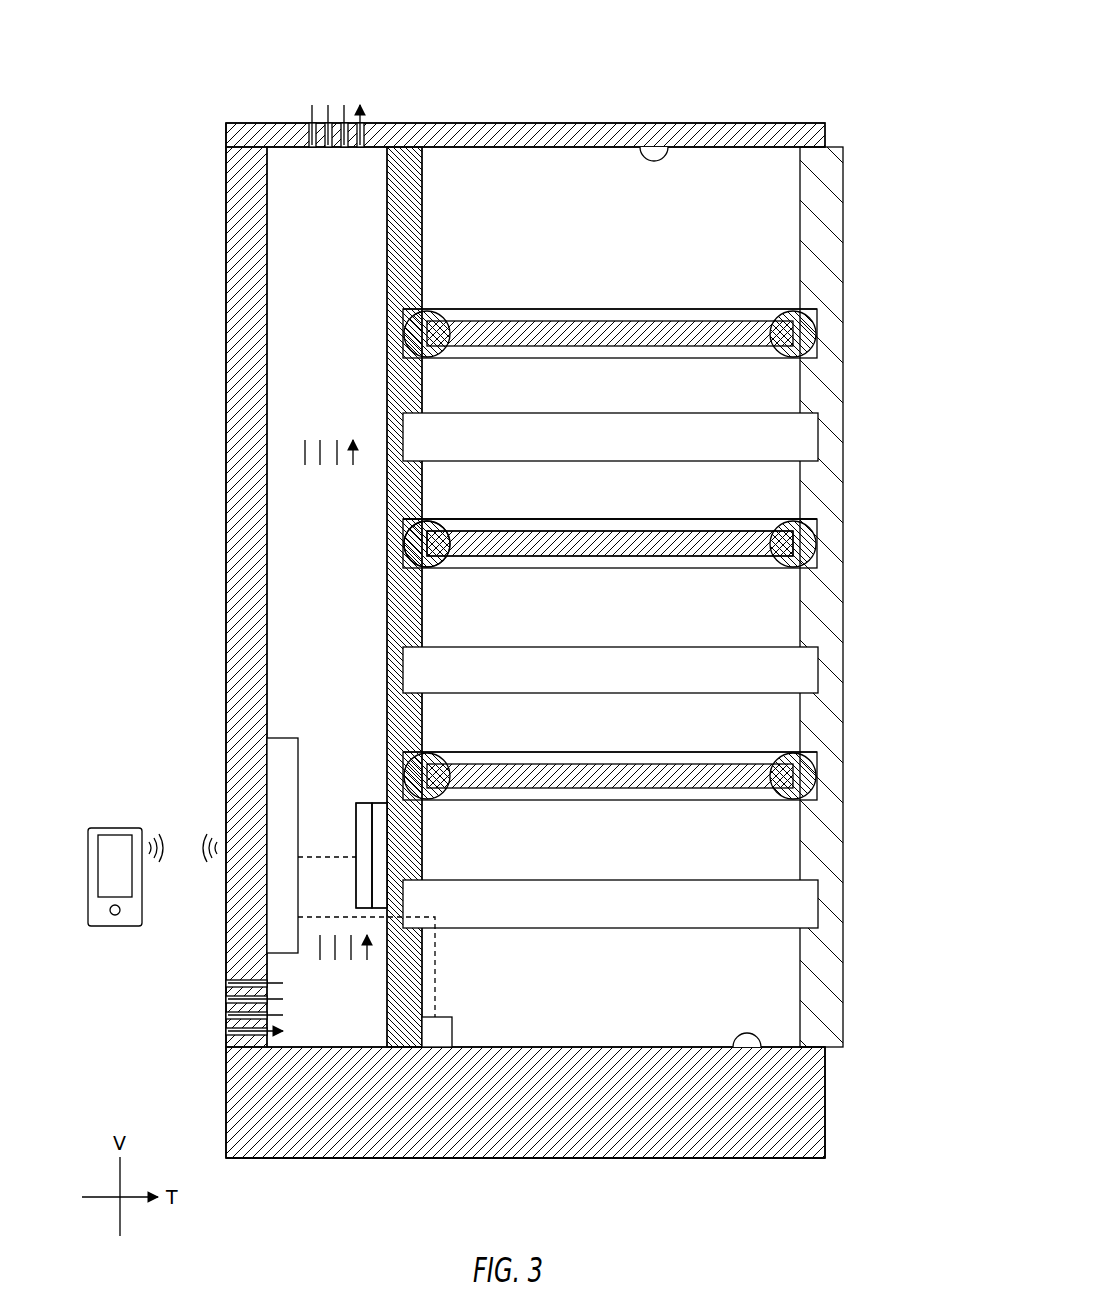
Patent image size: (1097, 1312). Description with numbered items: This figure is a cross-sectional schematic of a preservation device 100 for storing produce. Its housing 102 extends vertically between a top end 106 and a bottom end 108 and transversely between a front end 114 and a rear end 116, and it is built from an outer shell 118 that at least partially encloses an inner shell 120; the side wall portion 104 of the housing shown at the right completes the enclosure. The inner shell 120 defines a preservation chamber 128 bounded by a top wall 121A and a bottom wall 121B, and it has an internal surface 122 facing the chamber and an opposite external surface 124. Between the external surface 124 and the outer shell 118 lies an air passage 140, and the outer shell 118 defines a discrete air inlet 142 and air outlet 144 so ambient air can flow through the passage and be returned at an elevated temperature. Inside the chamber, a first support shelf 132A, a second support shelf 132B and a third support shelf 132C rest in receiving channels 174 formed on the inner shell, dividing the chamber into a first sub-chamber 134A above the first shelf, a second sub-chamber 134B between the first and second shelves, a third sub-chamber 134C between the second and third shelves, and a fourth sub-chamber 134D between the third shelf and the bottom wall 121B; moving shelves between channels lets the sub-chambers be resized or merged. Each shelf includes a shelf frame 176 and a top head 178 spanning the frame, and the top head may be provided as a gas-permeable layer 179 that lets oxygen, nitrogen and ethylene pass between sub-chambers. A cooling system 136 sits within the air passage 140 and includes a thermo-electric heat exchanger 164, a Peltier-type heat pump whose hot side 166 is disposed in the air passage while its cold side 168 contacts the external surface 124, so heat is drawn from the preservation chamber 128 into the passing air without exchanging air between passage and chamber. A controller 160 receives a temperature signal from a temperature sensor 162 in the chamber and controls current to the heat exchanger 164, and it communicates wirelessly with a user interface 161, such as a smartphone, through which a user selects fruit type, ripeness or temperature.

The preservation device 100 is at (860, 70).
The housing 102 is at (358, 1158).
The right side wall 104 is at (823, 207).
The top end 106 is at (743, 122).
The bottom end 108 is at (729, 1162).
The front end 114 is at (828, 1090).
The rear end 116 is at (224, 320).
The outer shell 118 is at (238, 232).
The inner shell 120 is at (414, 178).
The top wall 121A is at (656, 146).
The bottom wall 121B is at (760, 1046).
The internal surface 122 is at (424, 224).
The external surface 124 is at (374, 246).
The preservation chamber 128 is at (633, 250).
The first support shelf 132A is at (793, 335).
The second support shelf 132B is at (793, 545).
The third support shelf 132C is at (793, 775).
The first sub-chamber 134A is at (769, 248).
The second sub-chamber 134B is at (769, 393).
The third sub-chamber 134C is at (769, 722).
The fourth sub-chamber 134D is at (769, 1000).
The cooling system 136 is at (362, 788).
The air passage 140 is at (346, 533).
The air inlet 142 is at (224, 983).
The air outlet 144 is at (358, 152).
The controller 160 is at (280, 783).
The user interface 161 is at (114, 828).
The temperature sensor 162 is at (436, 1035).
The thermo-electric heat exchanger 164 is at (373, 802).
The hot side 166 is at (356, 830).
The cold side 168 is at (379, 848).
The receiving channel 174 is at (668, 307).
The shelf frame 176 is at (430, 564).
The top head 178 is at (511, 521).
The gas-permeable layer 179 is at (536, 556).